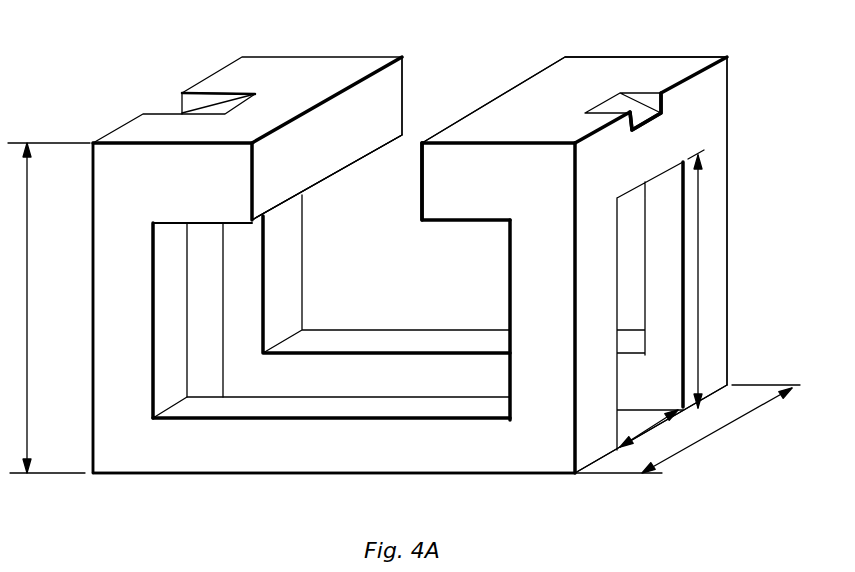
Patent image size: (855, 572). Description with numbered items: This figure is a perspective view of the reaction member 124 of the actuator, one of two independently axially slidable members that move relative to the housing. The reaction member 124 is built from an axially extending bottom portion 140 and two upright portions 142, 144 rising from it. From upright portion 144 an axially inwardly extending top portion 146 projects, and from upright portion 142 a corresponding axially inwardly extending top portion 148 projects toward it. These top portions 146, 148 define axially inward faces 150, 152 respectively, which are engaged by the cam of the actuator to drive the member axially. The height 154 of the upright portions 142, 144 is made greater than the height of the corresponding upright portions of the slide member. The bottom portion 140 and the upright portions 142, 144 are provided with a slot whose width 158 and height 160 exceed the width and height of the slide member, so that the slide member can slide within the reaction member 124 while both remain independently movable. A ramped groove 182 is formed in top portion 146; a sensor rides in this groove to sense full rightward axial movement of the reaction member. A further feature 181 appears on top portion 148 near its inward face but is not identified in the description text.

The reaction member 124 is at (102, 110).
The bottom portion 140 is at (295, 453).
The upright portion 142 is at (712, 260).
The upright portion 144 is at (110, 325).
The top portion 146 is at (323, 72).
The top portion 148 is at (572, 73).
The axially inward face 150 is at (382, 125).
The axially inward face 152 is at (422, 178).
The height 154 is at (27, 400).
The width 158 is at (646, 430).
The height 160 is at (700, 335).
The notch 181 is at (625, 103).
The ramped groove 182 is at (207, 105).